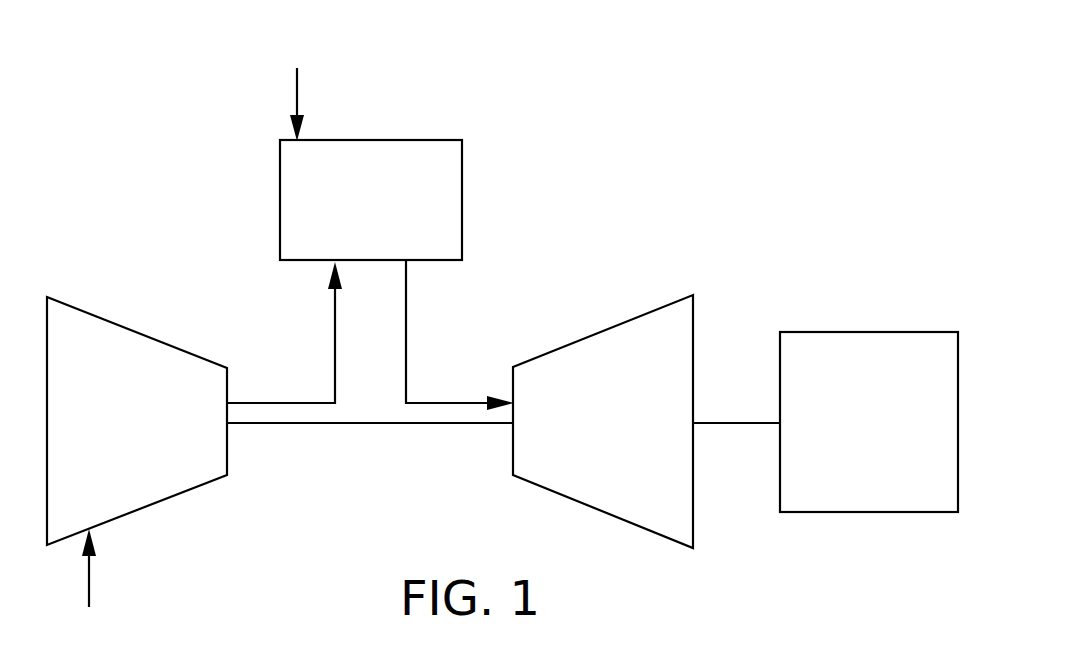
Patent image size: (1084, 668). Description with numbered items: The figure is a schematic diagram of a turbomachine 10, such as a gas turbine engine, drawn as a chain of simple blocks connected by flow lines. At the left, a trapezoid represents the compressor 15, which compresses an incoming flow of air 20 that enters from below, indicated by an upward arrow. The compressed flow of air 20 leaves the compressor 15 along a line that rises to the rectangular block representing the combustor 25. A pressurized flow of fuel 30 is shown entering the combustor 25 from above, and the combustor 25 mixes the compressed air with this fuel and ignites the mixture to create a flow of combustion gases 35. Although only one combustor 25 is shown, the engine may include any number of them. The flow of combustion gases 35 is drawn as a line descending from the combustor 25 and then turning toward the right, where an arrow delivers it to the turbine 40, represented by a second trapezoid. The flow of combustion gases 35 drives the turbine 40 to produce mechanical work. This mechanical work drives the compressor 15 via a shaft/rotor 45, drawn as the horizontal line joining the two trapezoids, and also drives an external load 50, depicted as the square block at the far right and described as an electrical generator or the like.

The turbomachine 10 is at (100, 189).
The compressor 15 is at (154, 433).
The flow of air 20 is at (90, 575).
The combustor 25 is at (386, 216).
The flow of fuel 30 is at (300, 100).
The flow of combustion gases 35 is at (447, 400).
The turbine 40 is at (619, 433).
The shaft/rotor 45 is at (730, 423).
The external load 50 is at (884, 438).